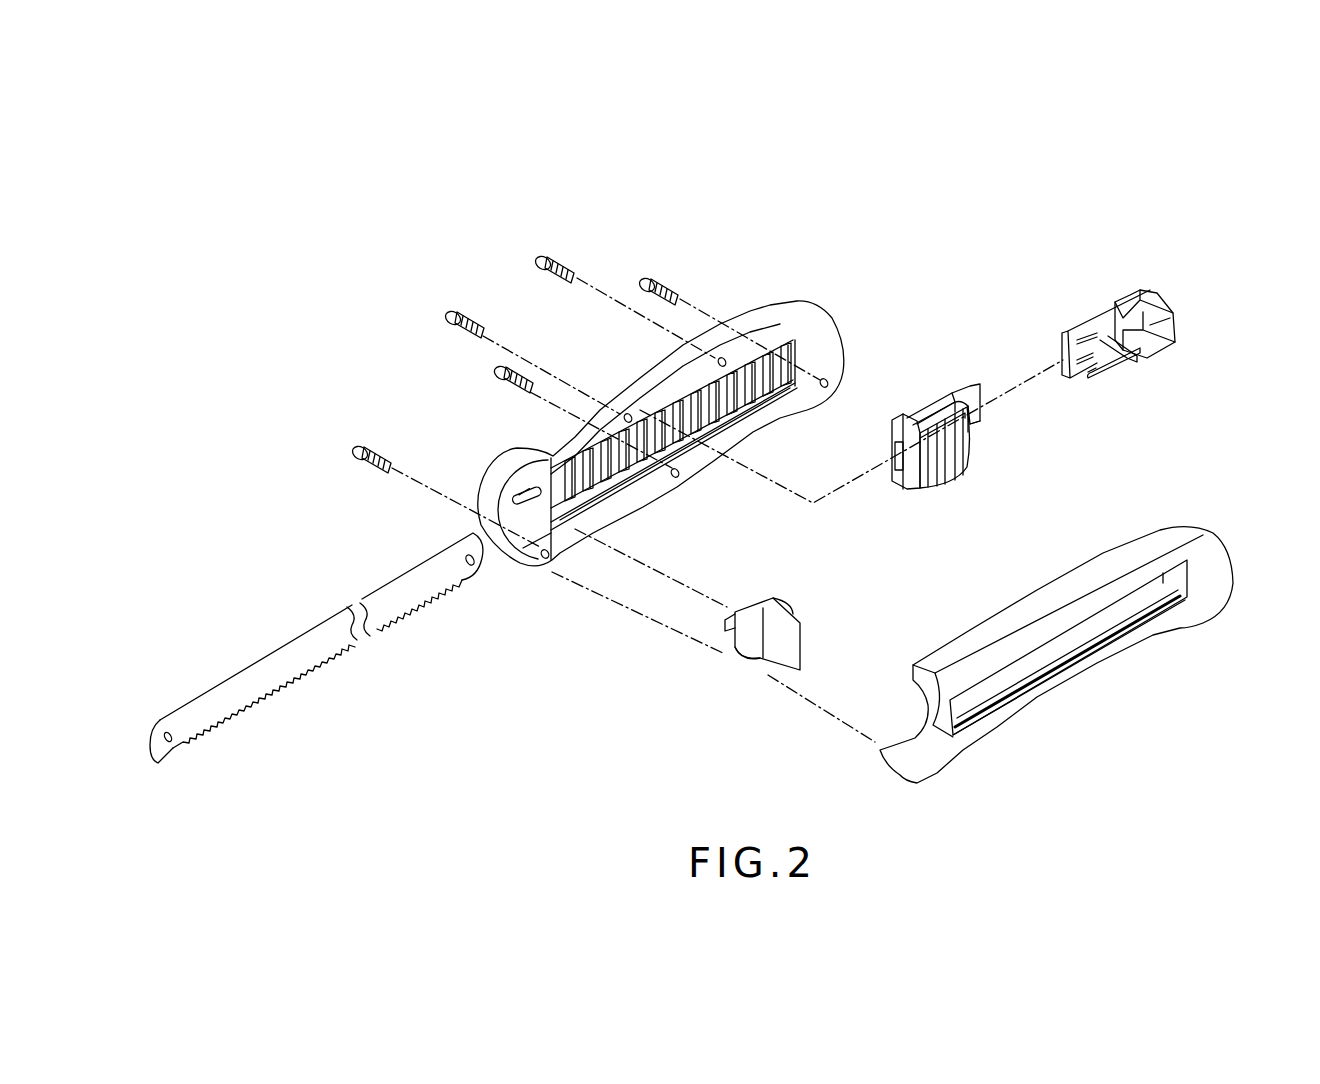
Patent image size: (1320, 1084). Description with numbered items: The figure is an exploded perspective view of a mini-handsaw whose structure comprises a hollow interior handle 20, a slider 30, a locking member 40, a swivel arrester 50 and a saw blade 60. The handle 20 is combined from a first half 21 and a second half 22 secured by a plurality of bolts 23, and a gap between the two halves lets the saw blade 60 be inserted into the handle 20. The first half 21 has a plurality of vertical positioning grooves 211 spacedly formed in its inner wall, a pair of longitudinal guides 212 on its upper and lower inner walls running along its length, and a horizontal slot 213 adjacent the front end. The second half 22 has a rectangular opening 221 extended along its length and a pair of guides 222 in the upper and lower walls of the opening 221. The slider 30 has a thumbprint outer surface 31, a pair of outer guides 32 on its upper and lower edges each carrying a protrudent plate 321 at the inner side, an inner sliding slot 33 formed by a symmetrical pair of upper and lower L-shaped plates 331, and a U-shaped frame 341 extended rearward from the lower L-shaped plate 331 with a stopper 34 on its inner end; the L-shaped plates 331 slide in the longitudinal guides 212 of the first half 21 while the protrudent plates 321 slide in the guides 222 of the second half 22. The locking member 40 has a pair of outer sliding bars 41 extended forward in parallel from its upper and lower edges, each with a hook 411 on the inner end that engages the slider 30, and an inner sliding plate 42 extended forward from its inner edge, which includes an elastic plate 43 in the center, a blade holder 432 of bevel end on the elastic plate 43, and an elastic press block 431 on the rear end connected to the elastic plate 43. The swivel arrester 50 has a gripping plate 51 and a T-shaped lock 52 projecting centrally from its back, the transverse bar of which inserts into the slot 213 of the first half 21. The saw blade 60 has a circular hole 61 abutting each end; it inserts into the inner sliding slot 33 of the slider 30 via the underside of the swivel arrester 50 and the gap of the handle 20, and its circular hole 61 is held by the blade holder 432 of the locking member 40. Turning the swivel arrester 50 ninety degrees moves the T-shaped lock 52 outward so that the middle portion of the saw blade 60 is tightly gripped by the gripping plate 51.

The handle 20 is at (848, 282).
The first half 21 is at (740, 328).
The vertical positioning grooves 211 is at (768, 352).
The longitudinal guides 212 is at (652, 485).
The horizontal slot 213 is at (520, 490).
The second half 22 is at (1097, 668).
The rectangular opening 221 is at (1093, 625).
The guides 222 is at (1005, 690).
The bolts 23 is at (475, 318).
The slider 30 is at (957, 372).
The thumbprint outer surface 31 is at (950, 462).
The outer guides 32 is at (918, 427).
The protrudent plate 321 is at (934, 395).
The inner sliding slot 33 is at (885, 440).
The L-shaped plates 331 is at (903, 420).
The stopper 34 is at (970, 392).
The U-shaped frame 341 is at (985, 425).
The locking member 40 is at (1150, 268).
The outer sliding bars 41 is at (1105, 385).
The hook 411 is at (1090, 382).
The inner sliding plate 42 is at (1061, 334).
The elastic plate 43 is at (1083, 352).
The elastic press block 431 is at (1165, 335).
The blade holder 432 is at (1120, 360).
The swivel arrester 50 is at (790, 643).
The gripping plate 51 is at (745, 660).
The T-shaped lock 52 is at (730, 625).
The saw blade 60 is at (363, 610).
The circular hole 61 is at (468, 570).